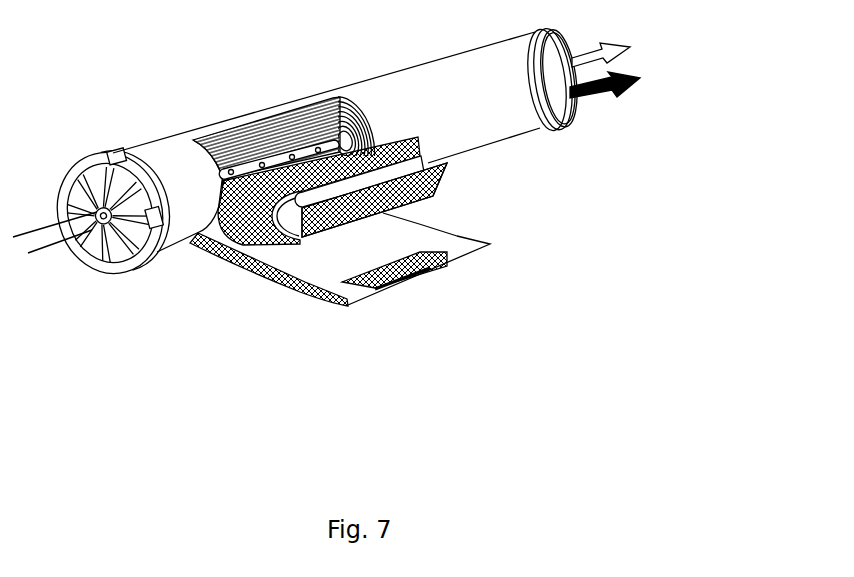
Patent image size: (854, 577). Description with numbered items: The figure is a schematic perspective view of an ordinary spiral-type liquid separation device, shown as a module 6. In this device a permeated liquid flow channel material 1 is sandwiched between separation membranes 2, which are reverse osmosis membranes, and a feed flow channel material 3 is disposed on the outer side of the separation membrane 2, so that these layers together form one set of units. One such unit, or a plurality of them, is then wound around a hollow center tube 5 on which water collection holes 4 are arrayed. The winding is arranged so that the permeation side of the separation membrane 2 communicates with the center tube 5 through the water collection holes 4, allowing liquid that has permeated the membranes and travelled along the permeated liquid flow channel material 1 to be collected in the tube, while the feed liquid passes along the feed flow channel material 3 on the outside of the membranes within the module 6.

The permeated liquid flow channel material 1 is at (393, 270).
The separation membrane 2 is at (462, 248).
The feed flow channel material 3 is at (423, 189).
The water collection hole 4 is at (232, 169).
The center tube 5 is at (277, 161).
The module 6 is at (365, 98).